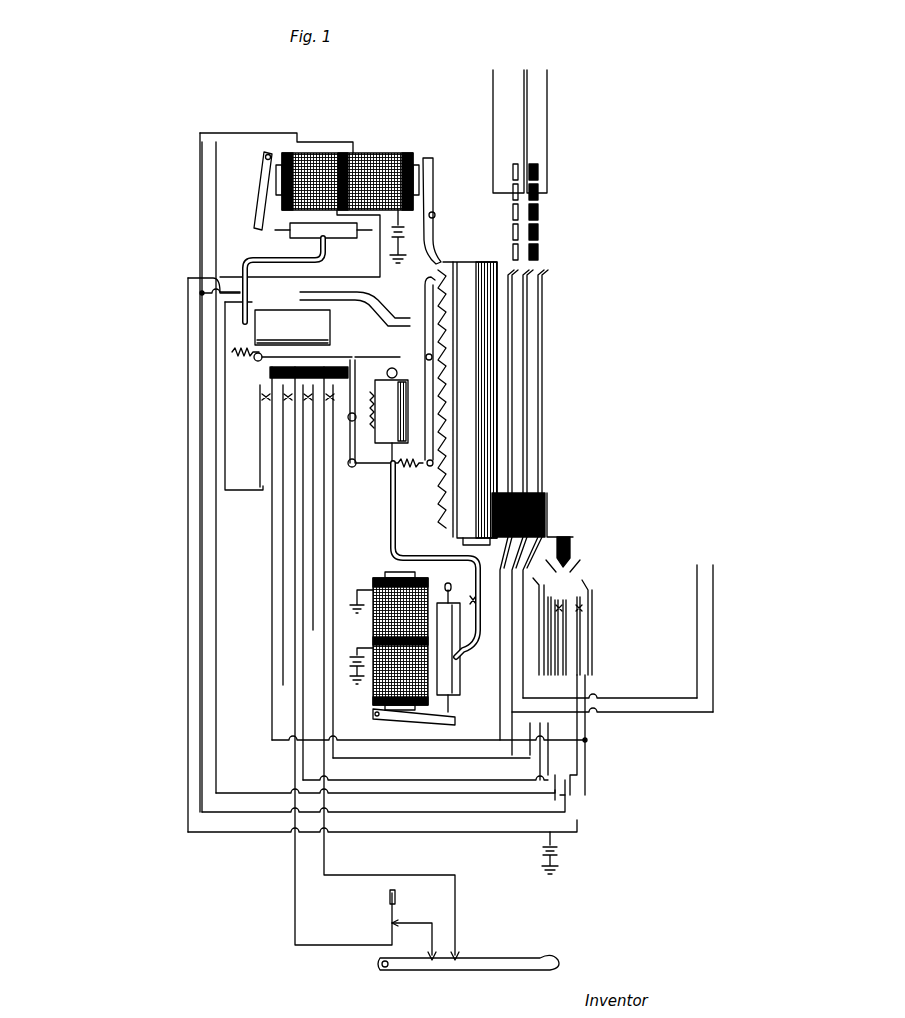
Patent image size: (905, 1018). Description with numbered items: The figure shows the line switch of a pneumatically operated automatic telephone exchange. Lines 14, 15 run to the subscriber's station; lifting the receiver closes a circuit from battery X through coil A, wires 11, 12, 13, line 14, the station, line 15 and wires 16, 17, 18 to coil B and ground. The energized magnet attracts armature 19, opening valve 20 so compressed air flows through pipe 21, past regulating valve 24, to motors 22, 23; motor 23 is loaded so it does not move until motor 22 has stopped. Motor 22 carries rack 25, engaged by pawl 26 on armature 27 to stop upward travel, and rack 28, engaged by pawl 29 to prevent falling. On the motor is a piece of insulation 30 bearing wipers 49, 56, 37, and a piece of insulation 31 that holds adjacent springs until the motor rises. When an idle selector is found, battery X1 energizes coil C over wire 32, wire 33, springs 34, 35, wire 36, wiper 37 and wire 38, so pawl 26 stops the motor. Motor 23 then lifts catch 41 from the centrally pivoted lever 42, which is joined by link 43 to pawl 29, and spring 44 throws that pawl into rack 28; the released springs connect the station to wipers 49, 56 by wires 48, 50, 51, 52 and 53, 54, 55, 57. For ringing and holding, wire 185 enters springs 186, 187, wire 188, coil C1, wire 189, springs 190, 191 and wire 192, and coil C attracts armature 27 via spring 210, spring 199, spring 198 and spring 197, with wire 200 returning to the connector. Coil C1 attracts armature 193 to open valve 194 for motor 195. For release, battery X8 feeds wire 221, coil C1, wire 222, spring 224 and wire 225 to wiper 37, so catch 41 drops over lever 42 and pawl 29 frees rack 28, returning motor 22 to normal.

The wire 188 is at (260, 135).
The wire 189 is at (188, 414).
The wire 32 is at (353, 150).
The wire 222 is at (195, 305).
The wire 225 is at (225, 370).
The contact spring 224 is at (372, 312).
The coil C is at (383, 152).
The coil C1 is at (318, 152).
The battery X1 is at (401, 246).
The armature 193 is at (260, 183).
The valve 194 is at (335, 238).
The motor 195 is at (281, 335).
The catch 41 is at (378, 360).
The centrally pivoted lever 42 is at (361, 413).
The motor 23 is at (389, 415).
The link 43 is at (394, 457).
The spring 44 is at (413, 470).
The contact spring 35 is at (268, 375).
The contact spring 34 is at (259, 415).
The wire 13 is at (282, 435).
The wire 12 is at (302, 455).
The wire 52 is at (312, 472).
The wire 53 is at (334, 480).
The wire 16 is at (322, 490).
The wire 17 is at (312, 490).
The wire 18 is at (318, 548).
The wire 11 is at (282, 600).
The wire 33 is at (240, 492).
The line 14 is at (294, 855).
The line 15 is at (326, 855).
The coil B is at (372, 598).
The coil A is at (378, 700).
The battery X is at (355, 662).
The armature 19 is at (412, 725).
The valve 20 is at (461, 684).
The regulating valve 24 is at (472, 596).
The pipe 21 is at (448, 560).
The wire 221 is at (555, 665).
The wire 38 is at (492, 96).
The wire 48 is at (524, 115).
The wire 57 is at (548, 118).
The armature 27 is at (430, 180).
The pawl 26 is at (436, 246).
The pawl 29 is at (426, 284).
The rack 28 is at (448, 292).
The rack 25 is at (452, 272).
The motor 22 is at (470, 403).
The wiper 49 is at (525, 316).
The wiper 56 is at (545, 345).
The wiper 37 is at (513, 380).
The piece of insulation 30 is at (547, 497).
The piece of insulation 31 is at (575, 550).
The contact spring 199 is at (575, 568).
The contact spring 210 is at (537, 616).
The contact spring 187 is at (592, 588).
The contact spring 186 is at (580, 585).
The contact spring 191 is at (572, 609).
The contact spring 190 is at (560, 626).
The contact spring 198 is at (540, 643).
The contact spring 197 is at (575, 657).
The wire 55 is at (522, 697).
The wire 50 is at (511, 713).
The wire 36 is at (271, 697).
The wire 54 is at (380, 762).
The wire 51 is at (470, 790).
The wire 192 is at (577, 762).
The wire 185 is at (697, 625).
The wire 200 is at (714, 625).
The battery X8 is at (558, 852).